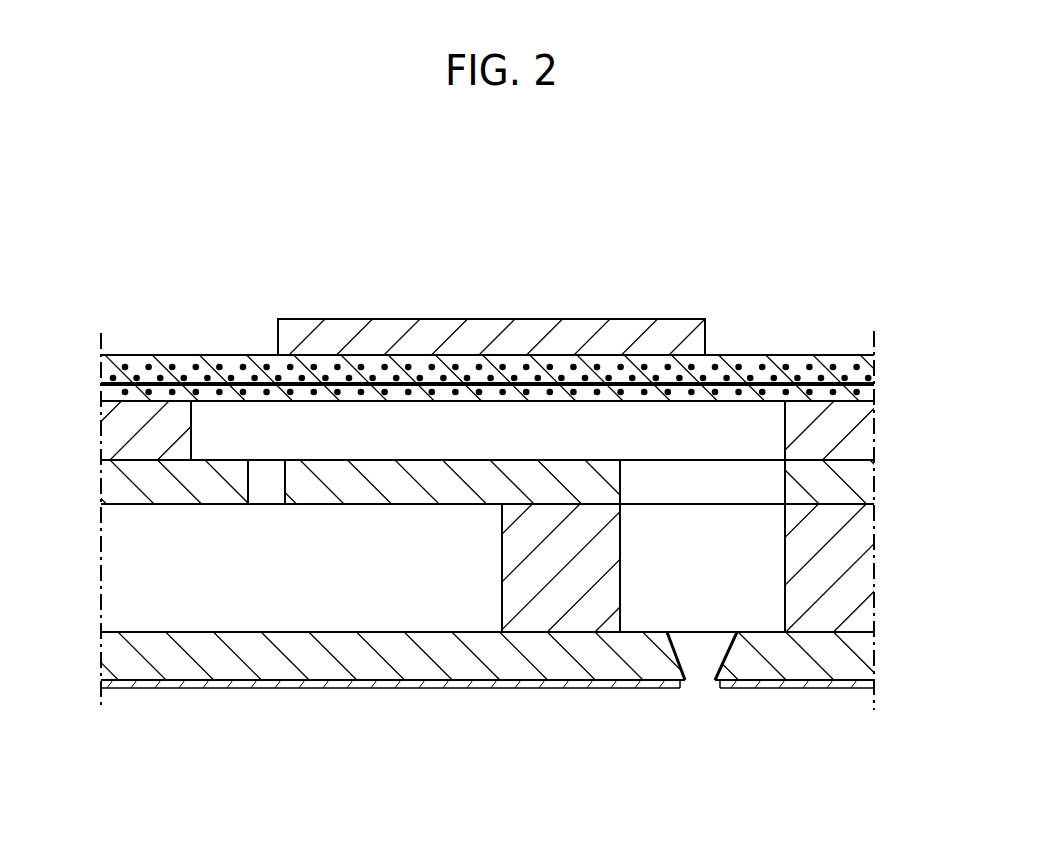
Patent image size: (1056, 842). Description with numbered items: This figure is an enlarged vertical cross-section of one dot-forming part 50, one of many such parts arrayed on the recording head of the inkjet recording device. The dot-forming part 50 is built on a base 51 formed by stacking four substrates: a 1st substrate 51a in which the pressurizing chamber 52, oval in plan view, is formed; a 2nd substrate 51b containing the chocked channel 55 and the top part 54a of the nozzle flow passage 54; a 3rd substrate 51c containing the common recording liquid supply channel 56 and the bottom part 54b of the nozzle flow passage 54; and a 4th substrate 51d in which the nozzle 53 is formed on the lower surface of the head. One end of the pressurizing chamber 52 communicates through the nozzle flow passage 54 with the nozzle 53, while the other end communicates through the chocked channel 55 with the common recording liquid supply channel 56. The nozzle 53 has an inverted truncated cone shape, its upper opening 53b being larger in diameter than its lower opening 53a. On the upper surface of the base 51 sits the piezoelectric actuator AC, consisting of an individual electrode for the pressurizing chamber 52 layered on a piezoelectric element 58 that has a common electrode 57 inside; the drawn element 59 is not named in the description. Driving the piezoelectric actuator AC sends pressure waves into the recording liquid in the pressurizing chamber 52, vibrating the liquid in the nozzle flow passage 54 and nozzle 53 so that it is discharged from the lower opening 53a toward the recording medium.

The dot-forming part 50 is at (638, 212).
The base 51 is at (978, 407).
The 1st substrate 51a is at (860, 427).
The 2nd substrate 51b is at (860, 482).
The 3rd substrate 51c is at (858, 563).
The 4th substrate 51d is at (858, 650).
The pressurizing chamber 52 is at (255, 422).
The nozzle 53 is at (690, 656).
The lower opening 53a is at (698, 688).
The upper opening 53b is at (703, 632).
The nozzle flow passage 54 is at (853, 298).
The top part of nozzle flow passage 54a is at (692, 475).
The bottom part of nozzle flow passage 54b is at (713, 520).
The chocked channel 55 is at (270, 492).
The common recording liquid supply channel 56 is at (318, 612).
The common electrode 57 is at (143, 380).
The piezoelectric element 58 is at (163, 363).
The drive electrode 59 is at (530, 330).
The piezoelectric actuator AC is at (412, 312).